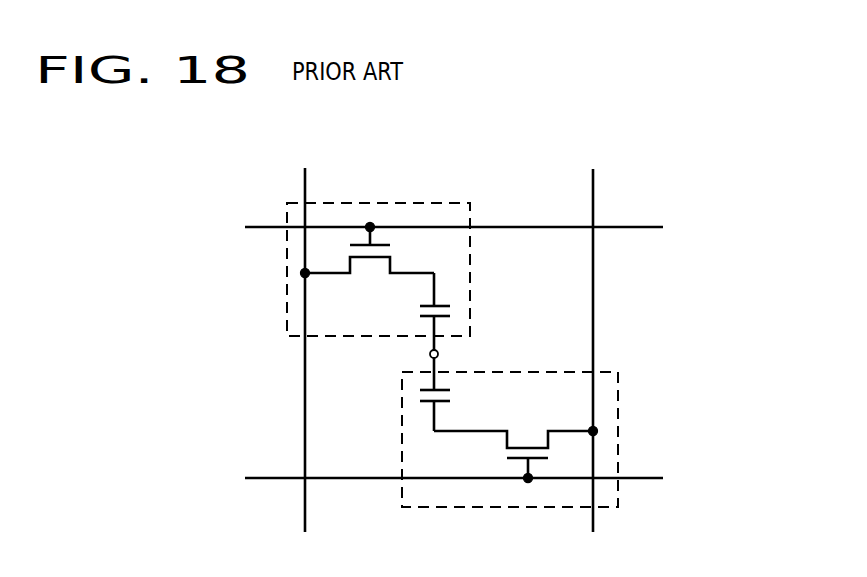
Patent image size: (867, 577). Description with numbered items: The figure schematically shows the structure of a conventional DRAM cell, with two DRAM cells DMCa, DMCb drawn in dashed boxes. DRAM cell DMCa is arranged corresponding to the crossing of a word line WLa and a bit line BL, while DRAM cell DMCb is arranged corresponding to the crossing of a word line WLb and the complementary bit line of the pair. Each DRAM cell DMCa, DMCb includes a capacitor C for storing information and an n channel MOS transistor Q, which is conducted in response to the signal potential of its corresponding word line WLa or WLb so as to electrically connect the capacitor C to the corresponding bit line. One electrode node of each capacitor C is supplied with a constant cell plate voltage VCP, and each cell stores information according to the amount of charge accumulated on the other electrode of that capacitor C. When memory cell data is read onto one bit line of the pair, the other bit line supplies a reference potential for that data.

The bit line BL is at (303, 515).
The word line WLa is at (645, 227).
The word line WLb is at (643, 475).
The DRAM cell DMCa is at (432, 202).
The DRAM cell DMCb is at (618, 400).
The n channel MOS transistor Q is at (367, 265).
The capacitor C is at (415, 312).
The cell plate voltage VCP is at (456, 355).